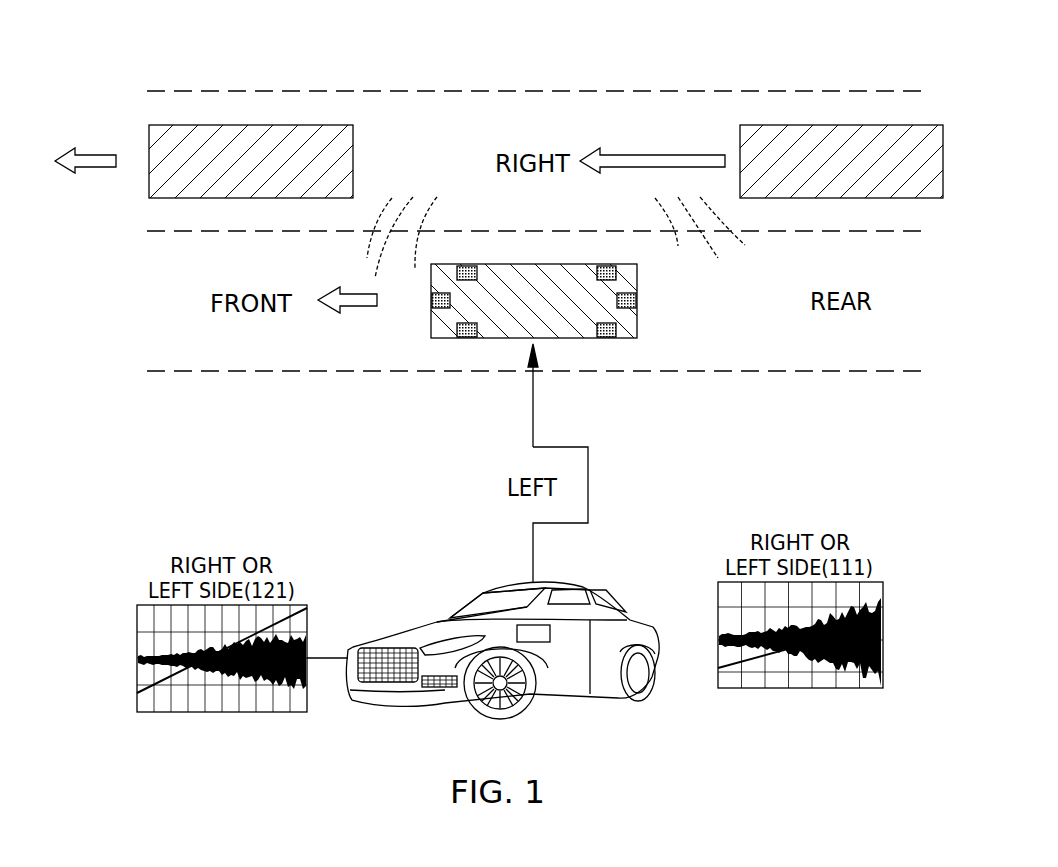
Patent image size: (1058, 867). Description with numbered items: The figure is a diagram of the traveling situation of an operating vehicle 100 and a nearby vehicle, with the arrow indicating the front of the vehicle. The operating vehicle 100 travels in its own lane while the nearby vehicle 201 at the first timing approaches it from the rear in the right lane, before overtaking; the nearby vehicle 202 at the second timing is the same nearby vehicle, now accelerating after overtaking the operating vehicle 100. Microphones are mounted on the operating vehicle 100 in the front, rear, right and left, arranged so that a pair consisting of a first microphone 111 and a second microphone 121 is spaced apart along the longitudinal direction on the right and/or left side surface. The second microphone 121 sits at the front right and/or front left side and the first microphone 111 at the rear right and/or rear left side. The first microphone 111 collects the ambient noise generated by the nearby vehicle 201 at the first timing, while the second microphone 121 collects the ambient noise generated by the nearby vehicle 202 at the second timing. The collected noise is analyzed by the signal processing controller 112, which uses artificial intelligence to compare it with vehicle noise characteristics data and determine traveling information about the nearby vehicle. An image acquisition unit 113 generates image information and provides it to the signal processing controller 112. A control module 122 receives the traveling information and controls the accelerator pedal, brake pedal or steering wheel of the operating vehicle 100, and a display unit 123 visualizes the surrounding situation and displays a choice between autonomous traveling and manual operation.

The operating vehicle 100 is at (567, 338).
The first microphone 111 is at (637, 273).
The signal processing controller 112 is at (637, 302).
The image acquisition unit 113 is at (610, 338).
The second microphone 121 is at (458, 272).
The control module 122 is at (441, 309).
The display unit 123 is at (467, 338).
The nearby vehicle at the first timing 201 is at (843, 125).
The nearby vehicle at the second timing 202 is at (251, 125).